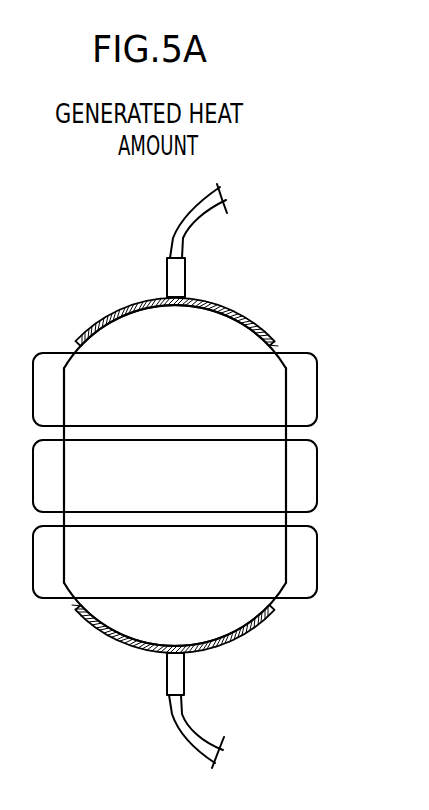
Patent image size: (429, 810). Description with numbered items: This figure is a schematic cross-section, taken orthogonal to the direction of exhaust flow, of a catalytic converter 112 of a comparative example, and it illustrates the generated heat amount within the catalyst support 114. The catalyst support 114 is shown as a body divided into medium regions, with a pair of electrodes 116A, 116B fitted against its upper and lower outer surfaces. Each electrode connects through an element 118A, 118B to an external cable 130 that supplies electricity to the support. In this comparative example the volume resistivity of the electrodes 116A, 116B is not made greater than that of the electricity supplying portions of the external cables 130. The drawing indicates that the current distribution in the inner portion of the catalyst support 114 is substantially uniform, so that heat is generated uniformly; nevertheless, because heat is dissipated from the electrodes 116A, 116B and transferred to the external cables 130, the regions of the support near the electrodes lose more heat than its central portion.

The catalytic converter 112 is at (80, 318).
The catalyst support 114 is at (288, 567).
The electrode 116A is at (124, 305).
The electrode 116B is at (102, 633).
The upper port 118A is at (185, 280).
The lower port 118B is at (184, 673).
The external cable 130 is at (180, 220).